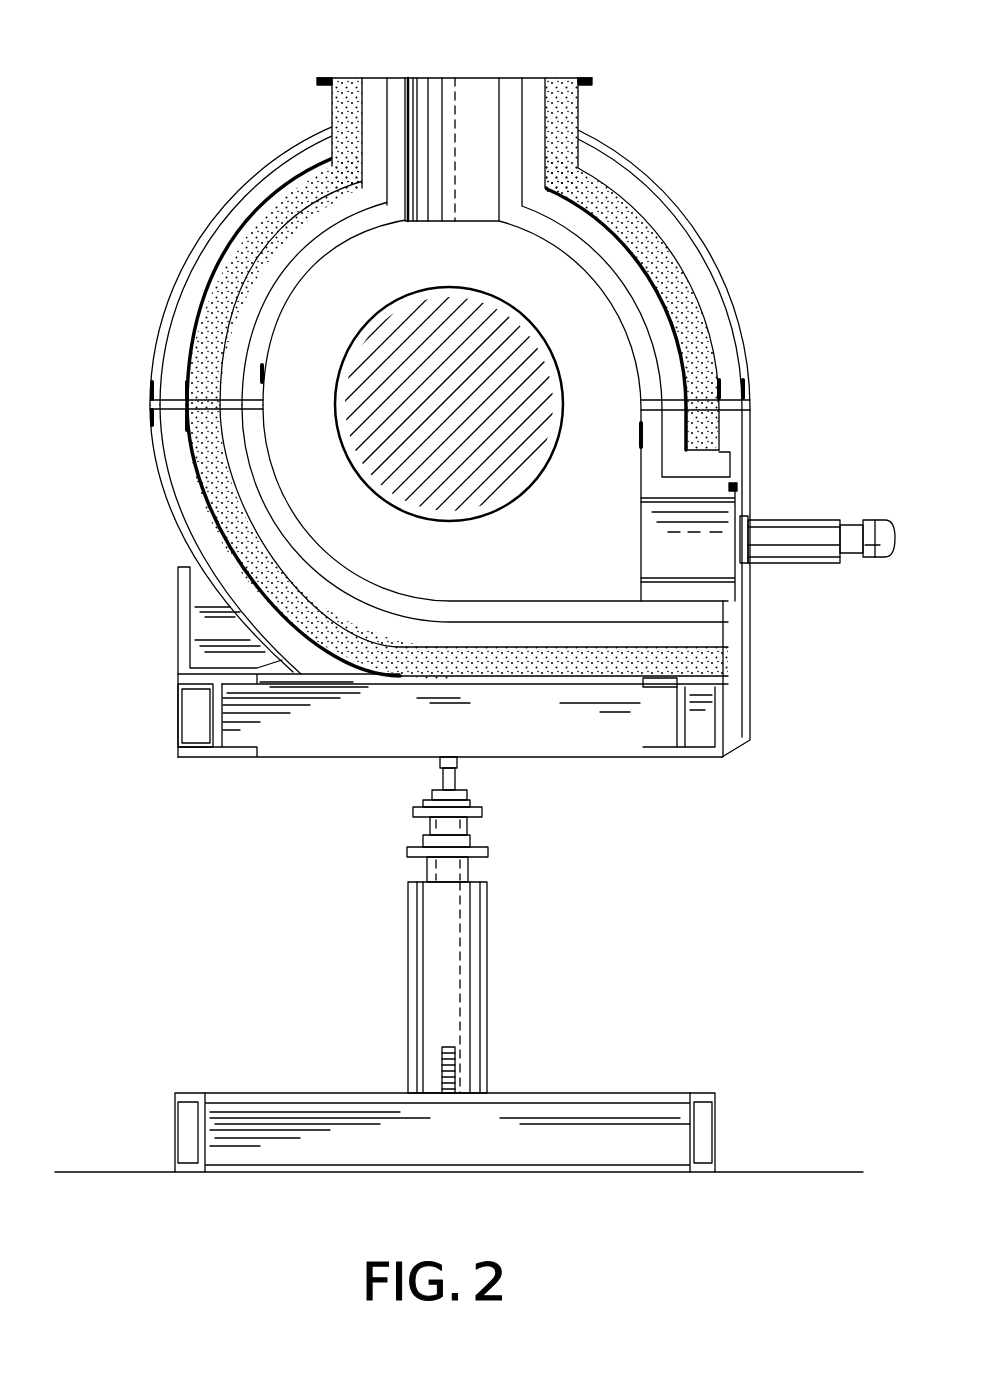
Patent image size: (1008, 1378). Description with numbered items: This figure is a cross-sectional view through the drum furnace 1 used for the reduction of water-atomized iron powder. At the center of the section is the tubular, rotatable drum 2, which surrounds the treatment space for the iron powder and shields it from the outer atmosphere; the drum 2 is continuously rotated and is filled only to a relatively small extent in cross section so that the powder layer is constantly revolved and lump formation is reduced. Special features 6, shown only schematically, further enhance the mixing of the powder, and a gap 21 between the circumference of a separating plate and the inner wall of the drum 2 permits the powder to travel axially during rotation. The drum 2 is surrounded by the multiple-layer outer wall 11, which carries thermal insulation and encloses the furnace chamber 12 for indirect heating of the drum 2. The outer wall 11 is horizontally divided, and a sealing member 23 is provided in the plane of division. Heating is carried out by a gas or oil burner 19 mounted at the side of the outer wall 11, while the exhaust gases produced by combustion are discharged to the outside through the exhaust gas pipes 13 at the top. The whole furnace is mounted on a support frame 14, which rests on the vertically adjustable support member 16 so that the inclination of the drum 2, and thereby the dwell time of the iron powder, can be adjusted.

The drum furnace 1 is at (475, 592).
The drum 2 is at (360, 487).
The special features 6 is at (385, 337).
The outer wall 11 is at (693, 318).
The furnace chamber 12 is at (575, 302).
The exhaust gas pipes 13 is at (483, 90).
The support frame 14 is at (657, 758).
The second vertically adjustable support member 16 is at (468, 973).
The gas or oil burner 19 is at (808, 560).
The gap 21 is at (340, 460).
The sealing member 23 is at (727, 402).